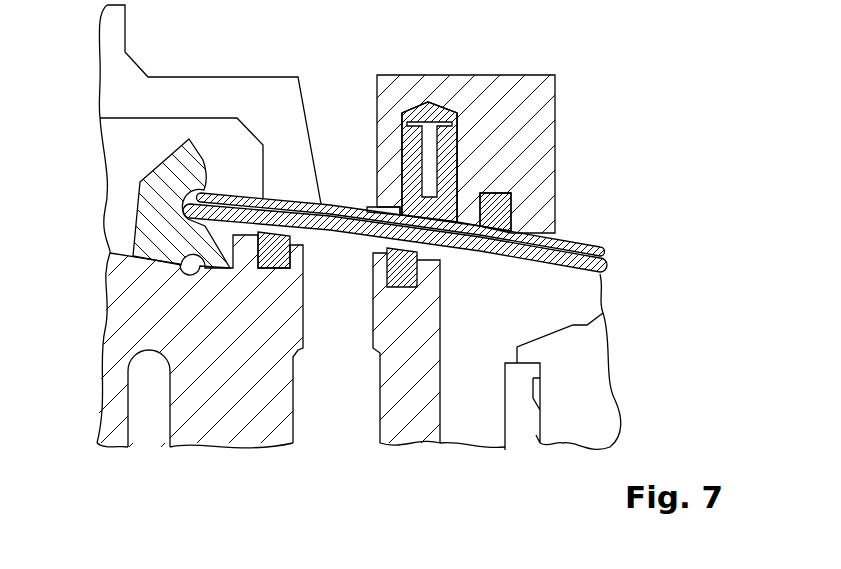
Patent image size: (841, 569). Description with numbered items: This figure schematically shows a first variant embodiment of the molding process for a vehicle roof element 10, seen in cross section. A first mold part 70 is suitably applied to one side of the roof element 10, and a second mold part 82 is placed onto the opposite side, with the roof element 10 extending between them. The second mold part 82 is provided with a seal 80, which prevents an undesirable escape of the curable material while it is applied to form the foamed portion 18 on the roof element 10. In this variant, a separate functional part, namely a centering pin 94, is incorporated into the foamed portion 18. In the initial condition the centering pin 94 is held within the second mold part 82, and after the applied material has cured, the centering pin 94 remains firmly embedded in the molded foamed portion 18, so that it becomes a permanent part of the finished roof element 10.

The roof element 10 is at (588, 248).
The foamed portion 18 is at (343, 207).
The first mold part 70 is at (140, 218).
The seal 80 is at (512, 213).
The second mold part 82 is at (500, 85).
The centering pin 94 is at (448, 157).